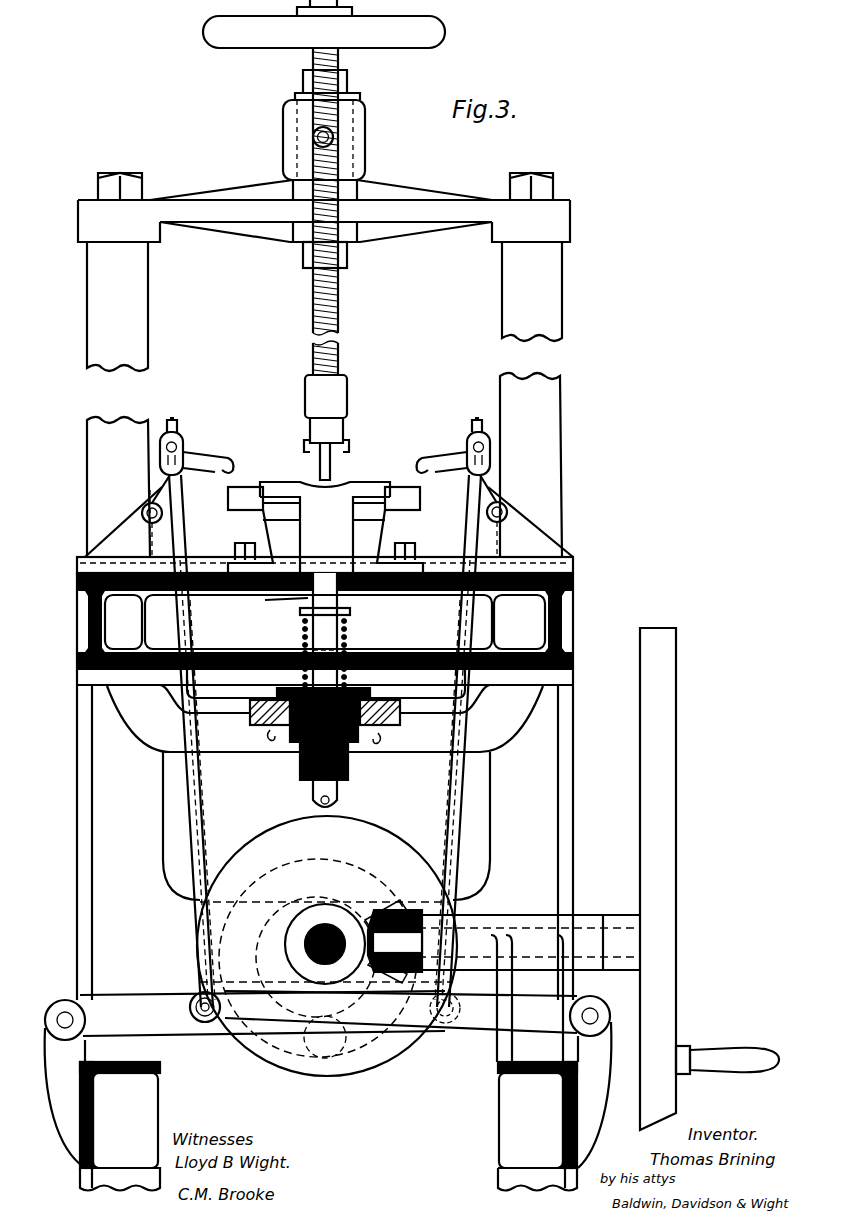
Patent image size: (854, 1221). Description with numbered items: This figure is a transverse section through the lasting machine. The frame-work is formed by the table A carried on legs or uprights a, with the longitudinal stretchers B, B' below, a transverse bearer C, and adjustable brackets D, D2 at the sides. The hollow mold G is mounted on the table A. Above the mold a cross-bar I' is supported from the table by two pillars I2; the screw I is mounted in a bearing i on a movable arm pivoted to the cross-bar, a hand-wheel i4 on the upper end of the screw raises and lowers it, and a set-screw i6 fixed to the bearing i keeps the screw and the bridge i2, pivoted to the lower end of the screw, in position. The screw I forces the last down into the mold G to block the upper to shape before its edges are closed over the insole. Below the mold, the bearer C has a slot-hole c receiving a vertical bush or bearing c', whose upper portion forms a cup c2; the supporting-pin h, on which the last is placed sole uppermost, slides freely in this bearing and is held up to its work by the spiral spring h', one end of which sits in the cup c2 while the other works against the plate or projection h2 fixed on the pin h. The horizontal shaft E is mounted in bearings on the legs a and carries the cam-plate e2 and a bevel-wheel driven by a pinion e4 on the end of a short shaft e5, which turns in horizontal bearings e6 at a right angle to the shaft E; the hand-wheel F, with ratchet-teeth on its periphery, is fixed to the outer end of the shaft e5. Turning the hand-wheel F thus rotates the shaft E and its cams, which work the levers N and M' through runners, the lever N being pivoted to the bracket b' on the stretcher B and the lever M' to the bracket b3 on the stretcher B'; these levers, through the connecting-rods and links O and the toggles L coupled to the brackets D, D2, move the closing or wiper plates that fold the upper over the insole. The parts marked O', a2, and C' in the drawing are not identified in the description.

The hand-wheel i4 is at (388, 52).
The bearing i is at (290, 125).
The set-screw i6 is at (334, 137).
The screw I is at (336, 211).
The cross-bar I' is at (324, 220).
The pillars I2 is at (324, 399).
The bridge i2 is at (349, 462).
The cam levers O' is at (325, 441).
The toggle L is at (522, 487).
The adjustable bracket D is at (325, 530).
The adjustable bracket D2 is at (530, 522).
The hollow mold G is at (325, 527).
The table A is at (103, 630).
The spring seat a2 is at (270, 609).
The plate or projection h2 is at (297, 605).
The supporting-pin h is at (342, 690).
The spiral spring h' is at (341, 677).
The transverse bearer C is at (325, 732).
The cross head arm C' is at (445, 711).
The vertical bush or bearing c' is at (270, 694).
The cup or recess c2 is at (365, 690).
The slot-hole c is at (321, 740).
The connecting-rods and links O is at (325, 741).
The legs or uprights a is at (325, 842).
The horizontal shaft E is at (328, 920).
The cam-plate e2 is at (340, 1078).
The pinion e4 is at (390, 905).
The short shaft e5 is at (695, 936).
The horizontal bearings e6 is at (527, 912).
The hand-wheel F is at (709, 879).
The lever N is at (245, 1015).
The lever M' is at (417, 1013).
The longitudinal stretcher B is at (120, 1126).
The longitudinal stretcher B' is at (537, 1126).
The projecting bracket b' is at (65, 1098).
The projecting bracket b3 is at (594, 1095).